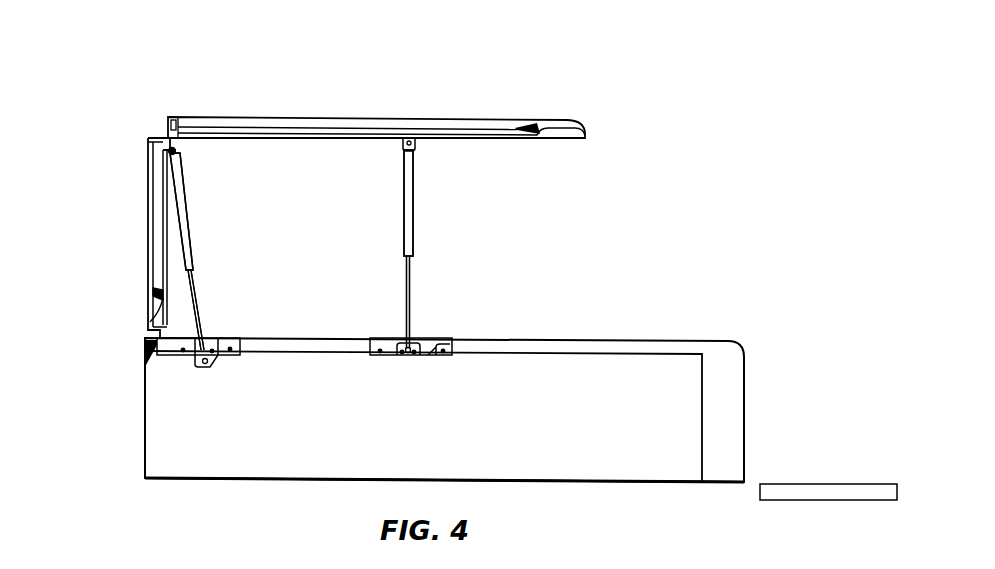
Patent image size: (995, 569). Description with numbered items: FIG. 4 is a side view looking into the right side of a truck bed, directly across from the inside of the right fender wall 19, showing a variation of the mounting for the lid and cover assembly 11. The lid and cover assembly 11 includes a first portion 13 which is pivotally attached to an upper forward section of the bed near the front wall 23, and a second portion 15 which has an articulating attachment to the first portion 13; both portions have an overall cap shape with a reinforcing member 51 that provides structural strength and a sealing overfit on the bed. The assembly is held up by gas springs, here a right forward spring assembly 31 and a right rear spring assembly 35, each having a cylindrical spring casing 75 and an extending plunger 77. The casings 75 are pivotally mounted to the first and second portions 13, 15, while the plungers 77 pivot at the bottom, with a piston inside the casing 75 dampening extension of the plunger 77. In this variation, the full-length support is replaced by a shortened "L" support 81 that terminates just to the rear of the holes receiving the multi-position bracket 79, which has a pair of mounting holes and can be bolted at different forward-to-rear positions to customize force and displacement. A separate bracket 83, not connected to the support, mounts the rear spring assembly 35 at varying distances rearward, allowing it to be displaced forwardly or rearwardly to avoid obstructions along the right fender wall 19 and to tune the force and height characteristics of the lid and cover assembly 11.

The lid and cover assembly 11 is at (654, 186).
The first portion 13 is at (160, 215).
The second portion 15 is at (398, 118).
The right fender wall 19 is at (650, 365).
The front wall 23 is at (148, 400).
The right forward spring assembly 31 is at (268, 206).
The right rear spring assembly 35 is at (440, 244).
The reinforcing member 51 is at (158, 295).
The cylindrical spring casing 75 is at (183, 198).
The plunger 77 is at (196, 298).
The multi-position bracket 79 is at (208, 365).
The shortened "L" support 81 is at (225, 340).
The separate bracket 83 is at (428, 356).